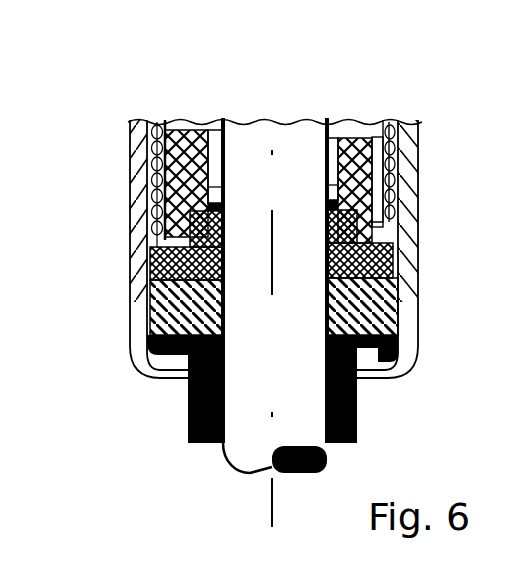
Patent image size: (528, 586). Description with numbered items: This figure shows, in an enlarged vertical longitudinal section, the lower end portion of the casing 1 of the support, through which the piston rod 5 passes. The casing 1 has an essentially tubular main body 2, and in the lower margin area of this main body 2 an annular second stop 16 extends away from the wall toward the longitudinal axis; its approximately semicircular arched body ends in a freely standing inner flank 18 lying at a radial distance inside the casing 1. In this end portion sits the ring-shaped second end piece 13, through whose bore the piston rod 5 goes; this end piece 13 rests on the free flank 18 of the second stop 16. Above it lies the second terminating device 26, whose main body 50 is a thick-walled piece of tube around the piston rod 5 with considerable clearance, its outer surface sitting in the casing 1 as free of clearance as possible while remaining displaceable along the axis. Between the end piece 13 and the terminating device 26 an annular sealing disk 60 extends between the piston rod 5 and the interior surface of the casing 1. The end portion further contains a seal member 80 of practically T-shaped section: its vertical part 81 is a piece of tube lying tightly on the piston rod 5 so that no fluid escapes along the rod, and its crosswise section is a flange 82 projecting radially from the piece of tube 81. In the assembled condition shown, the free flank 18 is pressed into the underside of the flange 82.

The casing 1 is at (118, 166).
The main body of the casing 2 is at (118, 219).
The piston rod 5 is at (258, 453).
The second end piece 13 is at (397, 297).
The second stop 16 is at (143, 372).
The inner flank 18 is at (380, 373).
The second terminating device 26 is at (194, 125).
The main body of the second terminating device 50 is at (371, 127).
The annular sealing disk 60 is at (393, 258).
The seal member 80 is at (181, 412).
The vertical part of the T-shape 81 is at (357, 418).
The flange 82 is at (400, 345).